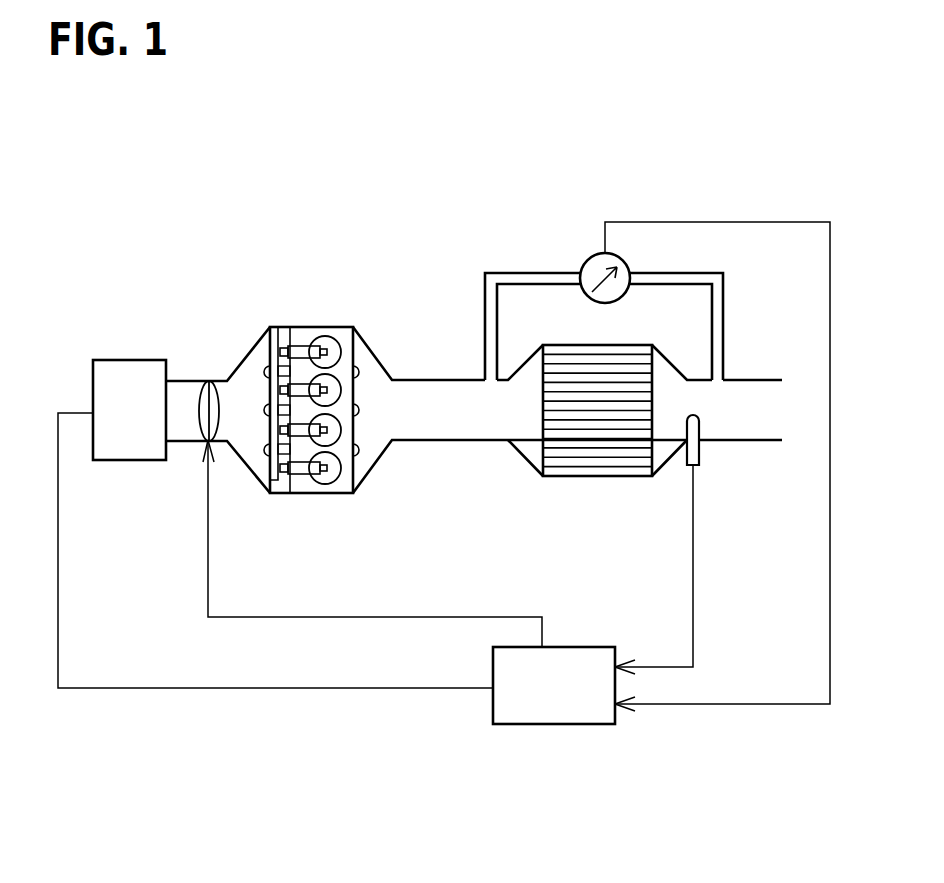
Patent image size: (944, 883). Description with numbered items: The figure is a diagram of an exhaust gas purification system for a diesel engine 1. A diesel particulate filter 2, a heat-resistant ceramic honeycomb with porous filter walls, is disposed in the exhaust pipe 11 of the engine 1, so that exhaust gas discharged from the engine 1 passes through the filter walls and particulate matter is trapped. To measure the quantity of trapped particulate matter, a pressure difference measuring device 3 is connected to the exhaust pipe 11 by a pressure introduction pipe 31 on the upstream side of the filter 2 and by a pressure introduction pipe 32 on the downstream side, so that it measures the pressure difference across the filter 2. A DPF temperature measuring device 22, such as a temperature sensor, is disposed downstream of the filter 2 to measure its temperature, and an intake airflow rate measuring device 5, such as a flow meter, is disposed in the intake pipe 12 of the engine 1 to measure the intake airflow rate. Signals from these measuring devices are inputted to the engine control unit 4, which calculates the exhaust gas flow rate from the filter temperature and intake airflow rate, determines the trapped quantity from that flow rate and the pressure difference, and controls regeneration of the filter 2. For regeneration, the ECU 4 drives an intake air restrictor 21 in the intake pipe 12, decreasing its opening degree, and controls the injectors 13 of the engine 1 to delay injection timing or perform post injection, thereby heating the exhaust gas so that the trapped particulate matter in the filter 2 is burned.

The diesel engine 1 is at (307, 328).
The diesel particulate filter 2 is at (610, 463).
The pressure difference measuring device 3 is at (588, 257).
The engine control unit 4 is at (567, 724).
The intake airflow rate measuring device 5 is at (130, 360).
The exhaust pipe 11 is at (442, 440).
The intake pipe 12 is at (185, 442).
The injectors 13 is at (300, 468).
The intake air restrictor 21 is at (228, 443).
The DPF temperature measuring device 22 is at (702, 452).
The pressure introduction pipe 31 is at (485, 313).
The pressure introduction pipe 32 is at (723, 310).